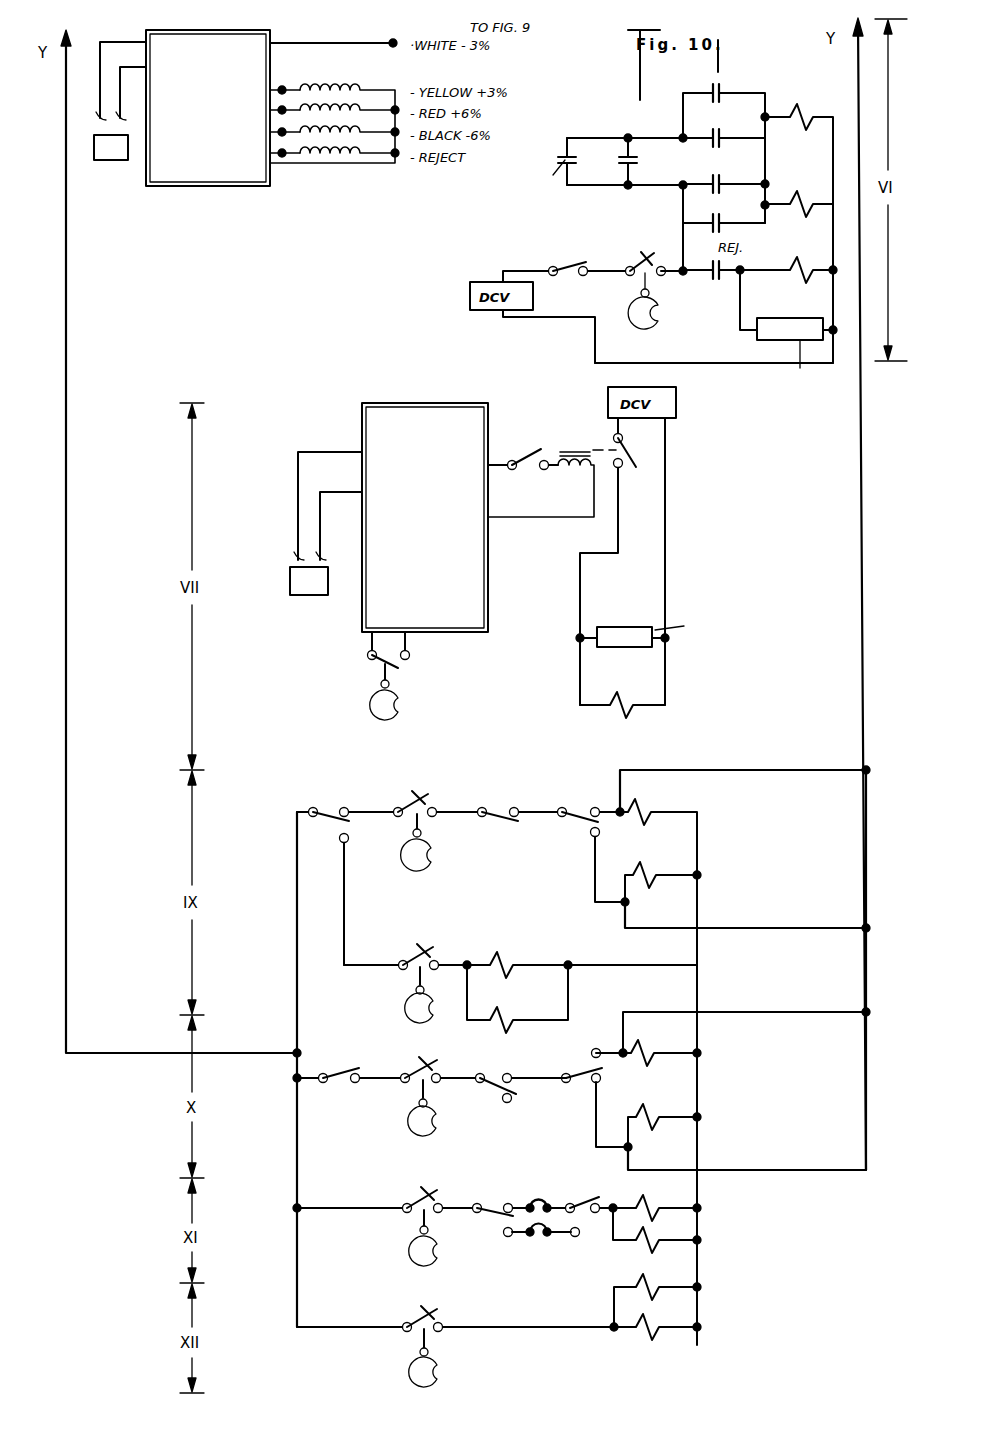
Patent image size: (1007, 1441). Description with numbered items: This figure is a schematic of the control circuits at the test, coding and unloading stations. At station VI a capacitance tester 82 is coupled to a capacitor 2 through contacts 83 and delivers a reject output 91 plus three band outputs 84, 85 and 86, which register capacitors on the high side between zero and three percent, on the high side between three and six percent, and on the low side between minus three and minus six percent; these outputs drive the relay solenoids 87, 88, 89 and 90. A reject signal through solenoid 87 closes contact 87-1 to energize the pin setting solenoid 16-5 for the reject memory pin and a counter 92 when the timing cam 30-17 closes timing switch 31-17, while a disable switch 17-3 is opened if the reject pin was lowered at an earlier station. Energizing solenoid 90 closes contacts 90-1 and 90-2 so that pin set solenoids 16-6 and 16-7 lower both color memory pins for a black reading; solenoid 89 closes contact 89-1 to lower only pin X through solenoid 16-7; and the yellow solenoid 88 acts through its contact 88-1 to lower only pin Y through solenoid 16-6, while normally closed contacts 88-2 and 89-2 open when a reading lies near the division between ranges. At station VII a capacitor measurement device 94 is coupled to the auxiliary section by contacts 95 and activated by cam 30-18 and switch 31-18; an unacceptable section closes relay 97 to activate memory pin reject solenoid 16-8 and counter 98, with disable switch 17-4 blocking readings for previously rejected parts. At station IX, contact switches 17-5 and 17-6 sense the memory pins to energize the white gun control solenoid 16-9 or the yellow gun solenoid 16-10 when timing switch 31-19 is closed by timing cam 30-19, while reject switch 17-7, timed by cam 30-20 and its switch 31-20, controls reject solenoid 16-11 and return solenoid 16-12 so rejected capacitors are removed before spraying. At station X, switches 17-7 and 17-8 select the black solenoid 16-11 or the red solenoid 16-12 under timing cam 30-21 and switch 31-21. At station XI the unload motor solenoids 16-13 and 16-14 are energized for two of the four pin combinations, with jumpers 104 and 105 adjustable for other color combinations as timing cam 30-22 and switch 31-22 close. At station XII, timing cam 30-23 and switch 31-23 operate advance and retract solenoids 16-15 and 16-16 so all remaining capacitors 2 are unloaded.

The capacitor 2 is at (108, 162).
The capacitance tester 82 is at (210, 149).
The contacts 83 is at (132, 119).
The output 84 is at (284, 87).
The second output 85 is at (280, 111).
The output 86 is at (280, 133).
The relay solenoid 87 is at (352, 166).
The relay solenoid 88 is at (312, 86).
The relay solenoid 89 is at (364, 100).
The relay solenoid 90 is at (370, 115).
The output 91 is at (280, 154).
The normally closed contact 88-2 is at (620, 151).
The normally closed contact 89-2 is at (558, 168).
The contact 89-1 is at (710, 88).
The contact 90-2 is at (710, 135).
The relay contact 88-1 is at (710, 176).
The contact 90-1 is at (700, 219).
The contact 87-1 is at (710, 282).
The pin setting solenoid 16-7 is at (810, 134).
The pin setting solenoid 16-6 is at (798, 212).
The pin setting solenoid 16-5 is at (802, 280).
The counter 92 is at (757, 337).
The disable switch 17-3 is at (556, 264).
The timing switch 31-17 is at (643, 254).
The timing cam 30-17 is at (645, 329).
The capacitor measurement device 94 is at (434, 549).
The contacts 95 is at (296, 560).
The disable switch 17-4 is at (534, 450).
The relay 97 is at (578, 450).
The counter 98 is at (622, 627).
The memory pin reject solenoid 16-8 is at (628, 716).
The timing switch 31-18 is at (366, 659).
The timing cam 30-18 is at (370, 712).
The reject switch 17-7 is at (321, 808).
The timing switch 31-19 is at (419, 798).
The contact switch 17-6 is at (496, 808).
The contact switch 17-5 is at (576, 808).
The timing cam 30-19 is at (434, 862).
The white gun control solenoid 16-9 is at (684, 1064).
The yellow gun control solenoid 16-10 is at (632, 868).
The cam switch 31-20 is at (416, 945).
The reject solenoid 16-11 is at (506, 956).
The return solenoid 16-12 is at (520, 1004).
The timing cam 30-20 is at (403, 1006).
The timing switch 31-21 is at (424, 1062).
The control switch 17-8 is at (494, 1092).
The timing cam 30-21 is at (408, 1128).
The timing switch 31-22 is at (431, 1183).
The jumper 104 is at (534, 1202).
The jumper 105 is at (503, 1235).
The timing cam 30-22 is at (410, 1256).
The unload motor solenoid 16-13 is at (694, 1204).
The unload motor solenoid 16-14 is at (646, 1236).
The timing switch 31-23 is at (421, 1312).
The advance solenoid 16-15 is at (650, 1282).
The retract solenoid 16-16 is at (646, 1322).
The timing cam 30-23 is at (410, 1366).